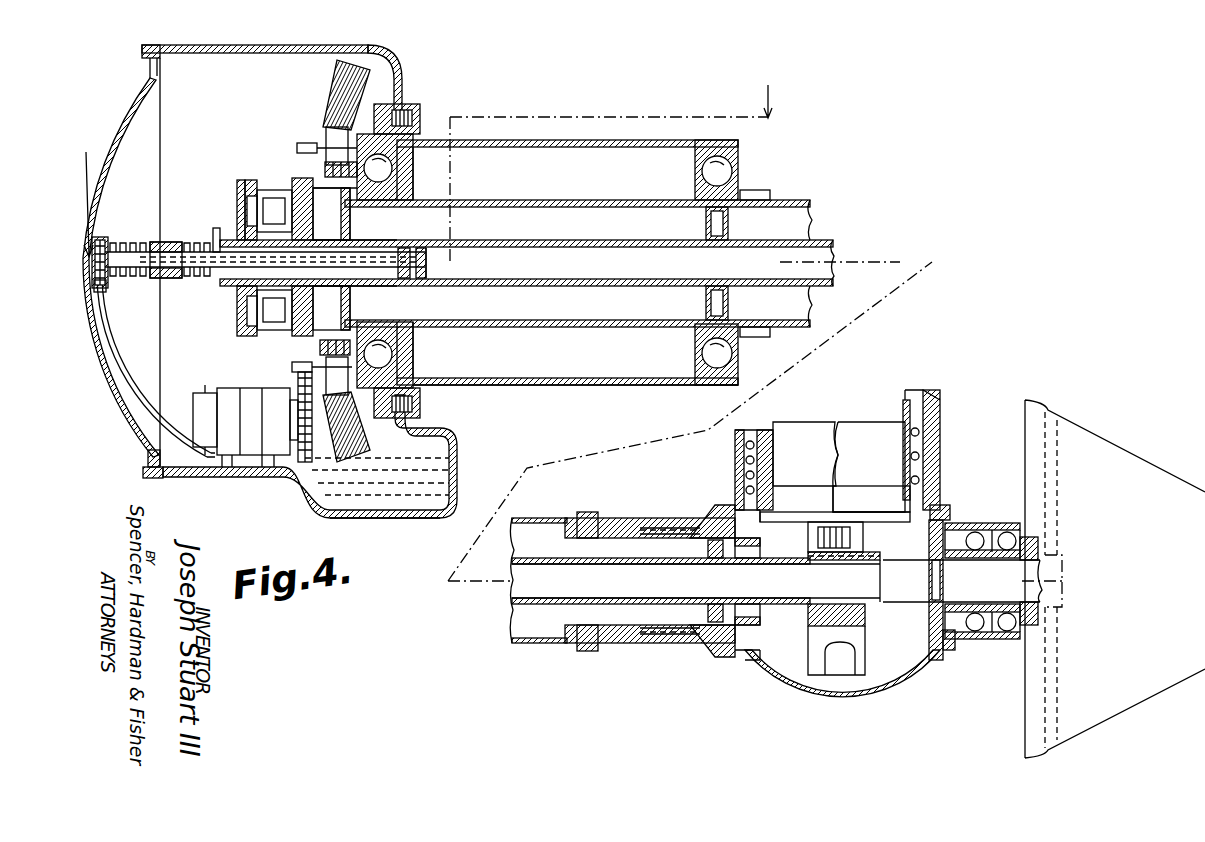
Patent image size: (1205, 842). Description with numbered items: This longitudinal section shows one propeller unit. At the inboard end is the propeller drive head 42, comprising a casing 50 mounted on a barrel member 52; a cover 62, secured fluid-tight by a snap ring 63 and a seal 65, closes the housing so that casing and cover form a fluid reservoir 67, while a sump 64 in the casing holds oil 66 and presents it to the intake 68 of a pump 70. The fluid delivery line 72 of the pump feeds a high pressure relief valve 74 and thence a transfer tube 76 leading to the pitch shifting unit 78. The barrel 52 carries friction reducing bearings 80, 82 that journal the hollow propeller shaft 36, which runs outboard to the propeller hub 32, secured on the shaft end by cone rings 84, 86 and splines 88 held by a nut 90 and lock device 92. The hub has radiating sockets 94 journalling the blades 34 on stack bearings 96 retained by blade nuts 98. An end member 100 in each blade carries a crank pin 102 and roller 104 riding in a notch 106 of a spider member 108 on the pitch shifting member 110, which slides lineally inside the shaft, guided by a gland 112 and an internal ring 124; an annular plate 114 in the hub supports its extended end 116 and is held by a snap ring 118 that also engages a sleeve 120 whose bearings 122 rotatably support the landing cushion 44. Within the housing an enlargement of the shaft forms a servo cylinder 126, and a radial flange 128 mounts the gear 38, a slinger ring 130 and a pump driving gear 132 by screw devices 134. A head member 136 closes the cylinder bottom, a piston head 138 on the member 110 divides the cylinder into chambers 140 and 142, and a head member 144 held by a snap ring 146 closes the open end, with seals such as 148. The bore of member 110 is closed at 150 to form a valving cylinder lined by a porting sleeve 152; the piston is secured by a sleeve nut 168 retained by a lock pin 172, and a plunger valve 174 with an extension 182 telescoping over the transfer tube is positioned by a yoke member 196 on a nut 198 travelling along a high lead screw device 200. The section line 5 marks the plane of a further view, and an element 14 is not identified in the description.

The section line 5- 5 is at (429, 161).
The outer tube 14 is at (578, 385).
The propeller hub 32 is at (800, 680).
The blade 34 is at (796, 432).
The propeller shaft 36 is at (805, 202).
The gear 38 is at (352, 60).
The propeller drive head 42 is at (386, 40).
The landing cushion 44 is at (1130, 470).
The casing 50 is at (265, 53).
The barrel member 52 is at (528, 140).
The cover 62 is at (112, 372).
The snap ring 63 is at (148, 460).
The sump 64 is at (450, 516).
The seal 65 is at (153, 478).
The oil or fluid pressure medium 66 is at (330, 490).
The fluid reservoir 67 is at (208, 68).
The intake 68 is at (382, 506).
The pump 70 is at (242, 440).
The fluid delivery line 72 is at (128, 388).
The high pressure relief valve 74 is at (103, 237).
The transfer tube 76 is at (112, 282).
The pitch shifting unit 78 is at (245, 336).
The friction reducing bearing 80 is at (393, 167).
The friction reducing bearing 82 is at (702, 350).
The cone ring 84 is at (588, 512).
The cone ring 86 is at (708, 512).
The splines 88 is at (650, 643).
The nut 90 is at (740, 657).
The lock device 92 is at (760, 545).
The radiating sockets 94 is at (735, 455).
The stack bearings 96 is at (940, 452).
The blade nuts 98 is at (930, 392).
The end member 100 is at (797, 512).
The crank pin 102 is at (871, 497).
The roller 104 is at (863, 537).
The notch 106 is at (848, 685).
The spider member 108 is at (860, 622).
The pitch shifting member 110 is at (833, 243).
The gland 112 is at (708, 606).
The annular plate 114 is at (932, 660).
The extended end 116 is at (958, 597).
The snap ring 118 is at (950, 650).
The sleeve 120 is at (978, 523).
The friction reducing bearings 122 is at (1005, 634).
The internal ring 124 is at (706, 300).
The servo cylinder 126 is at (296, 333).
The radial flange 128 is at (350, 340).
The slinger ring 130 is at (405, 108).
The pump driving gear 132 is at (304, 143).
The screw devices 134 is at (292, 368).
The head member 136 is at (350, 214).
The piston head 138 is at (300, 188).
The chamber 140 is at (272, 200).
The chamber 142 is at (345, 232).
The head member 144 is at (250, 212).
The snap ring 146 is at (240, 192).
The fluid pressure seal 148 is at (250, 183).
The bore closure 150 is at (432, 262).
The porting sleeve 152 is at (412, 279).
The sleeve nut 168 is at (183, 268).
The lock pin 172 is at (214, 232).
The plunger valve 174 is at (332, 286).
The extension 182 is at (170, 278).
The yoke member 196 is at (126, 243).
The nut 198 is at (152, 278).
The high lead screw device 200 is at (200, 243).